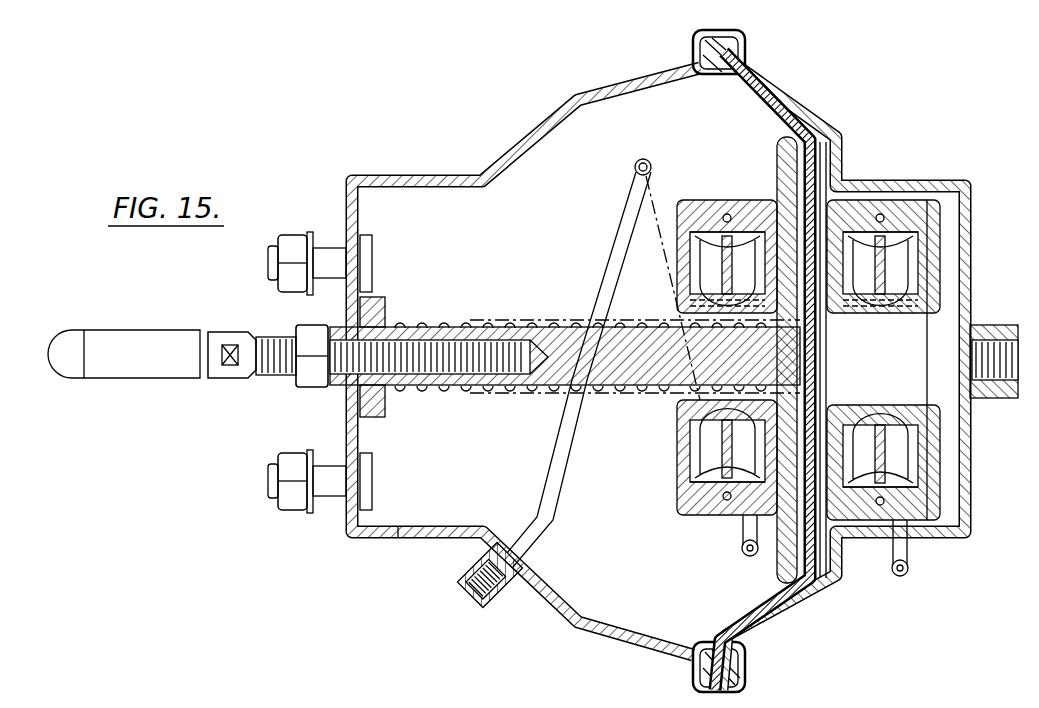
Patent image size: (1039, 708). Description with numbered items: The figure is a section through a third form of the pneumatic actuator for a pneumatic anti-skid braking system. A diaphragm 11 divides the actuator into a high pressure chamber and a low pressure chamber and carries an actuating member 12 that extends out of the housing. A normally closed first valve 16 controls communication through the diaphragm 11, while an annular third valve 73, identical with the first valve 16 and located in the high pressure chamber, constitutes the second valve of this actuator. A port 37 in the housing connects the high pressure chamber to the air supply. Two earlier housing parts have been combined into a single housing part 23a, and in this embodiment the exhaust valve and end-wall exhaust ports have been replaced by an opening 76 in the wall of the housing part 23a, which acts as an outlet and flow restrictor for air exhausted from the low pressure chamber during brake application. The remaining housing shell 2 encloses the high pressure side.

The rear housing shell 2 is at (771, 612).
The diaphragm 11 is at (752, 104).
The actuating member 12 is at (155, 379).
The first valve 16 is at (711, 192).
The housing part 23a is at (576, 631).
The port 37 is at (991, 340).
The third valve 73 is at (902, 200).
The opening 76 is at (410, 538).